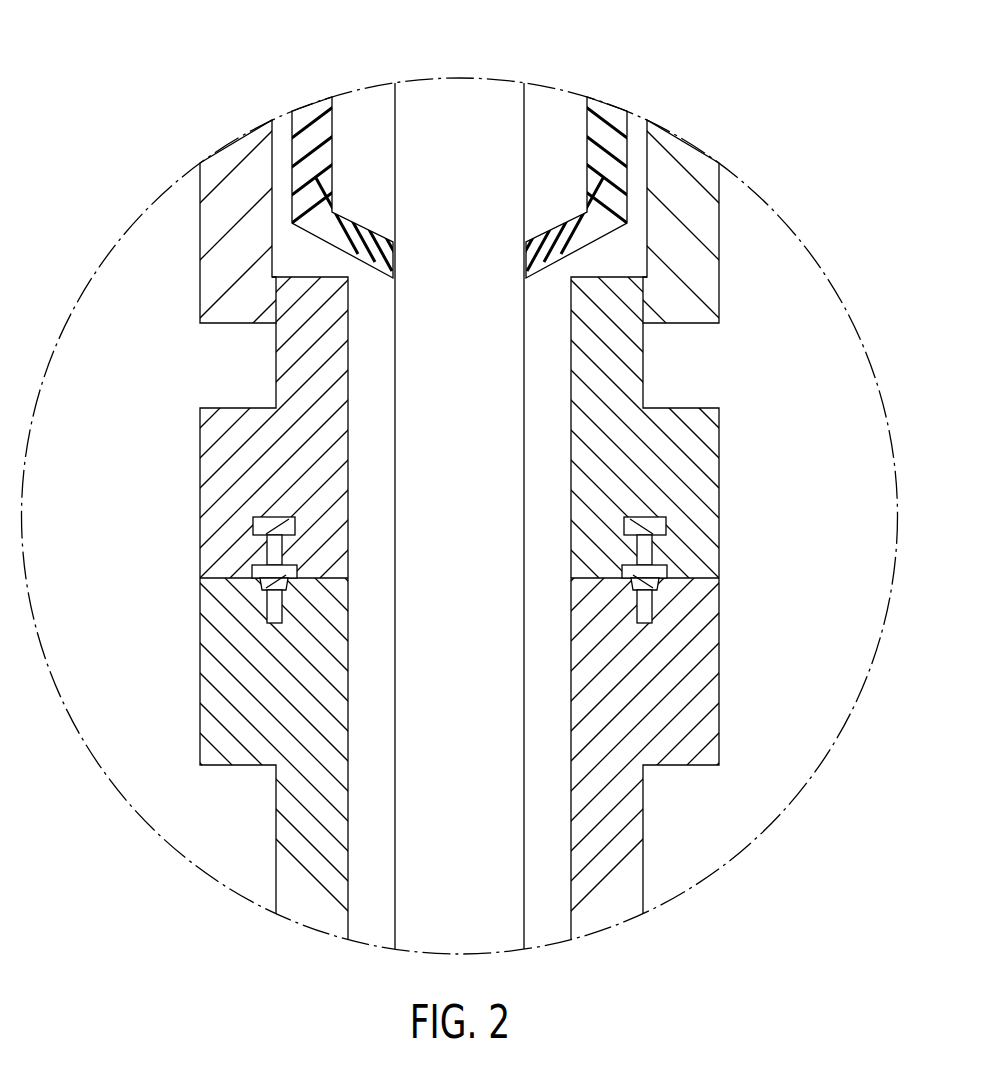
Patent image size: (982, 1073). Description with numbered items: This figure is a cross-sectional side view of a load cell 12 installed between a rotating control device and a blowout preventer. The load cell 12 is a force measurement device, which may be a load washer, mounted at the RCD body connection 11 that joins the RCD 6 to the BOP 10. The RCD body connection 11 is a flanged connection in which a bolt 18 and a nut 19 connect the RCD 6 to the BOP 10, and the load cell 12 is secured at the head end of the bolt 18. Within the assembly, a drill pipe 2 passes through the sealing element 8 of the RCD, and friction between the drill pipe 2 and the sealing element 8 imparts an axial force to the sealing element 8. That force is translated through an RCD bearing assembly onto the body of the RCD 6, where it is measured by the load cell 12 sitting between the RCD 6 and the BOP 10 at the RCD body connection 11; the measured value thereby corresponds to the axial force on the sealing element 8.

The drill pipe 2 is at (523, 197).
The RCD 6 is at (720, 237).
The sealing element 8 is at (331, 183).
The BOP 10 is at (197, 756).
The RCD body connection 11 is at (748, 535).
The load cell 12 is at (254, 573).
The bolt 18 is at (254, 527).
The nut 19 is at (262, 591).